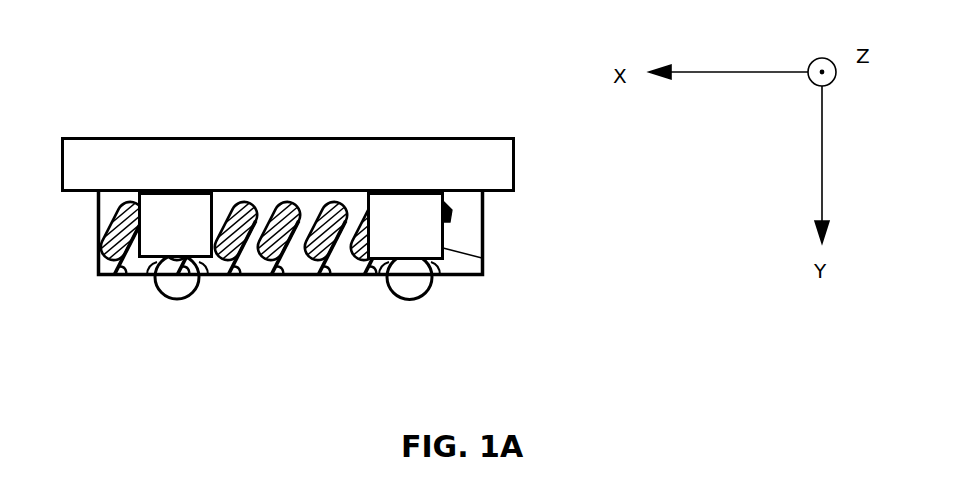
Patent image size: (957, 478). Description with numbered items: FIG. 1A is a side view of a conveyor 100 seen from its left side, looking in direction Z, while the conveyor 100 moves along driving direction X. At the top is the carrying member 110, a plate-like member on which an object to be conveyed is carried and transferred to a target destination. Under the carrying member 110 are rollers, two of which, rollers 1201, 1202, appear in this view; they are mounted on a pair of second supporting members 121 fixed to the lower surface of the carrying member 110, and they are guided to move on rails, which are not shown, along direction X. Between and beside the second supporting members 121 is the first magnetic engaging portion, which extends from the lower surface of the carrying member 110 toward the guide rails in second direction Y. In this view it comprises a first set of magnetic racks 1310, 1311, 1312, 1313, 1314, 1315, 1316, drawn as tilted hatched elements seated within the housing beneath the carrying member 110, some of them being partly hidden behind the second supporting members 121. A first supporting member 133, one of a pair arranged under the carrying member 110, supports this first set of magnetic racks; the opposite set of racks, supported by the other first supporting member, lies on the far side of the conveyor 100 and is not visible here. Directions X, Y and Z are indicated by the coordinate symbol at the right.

The conveyor 100 is at (216, 70).
The carrying member 110 is at (377, 137).
The second supporting member 121 is at (137, 201).
The roller 1201 is at (181, 298).
The roller 1202 is at (426, 292).
The magnetic rack 1310 is at (446, 221).
The magnetic rack 1311 is at (375, 275).
The magnetic rack 1312 is at (343, 275).
The magnetic rack 1313 is at (292, 275).
The magnetic rack 1314 is at (243, 275).
The magnetic rack 1315 is at (147, 275).
The magnetic rack 1316 is at (103, 275).
The first supporting member 133 is at (482, 258).